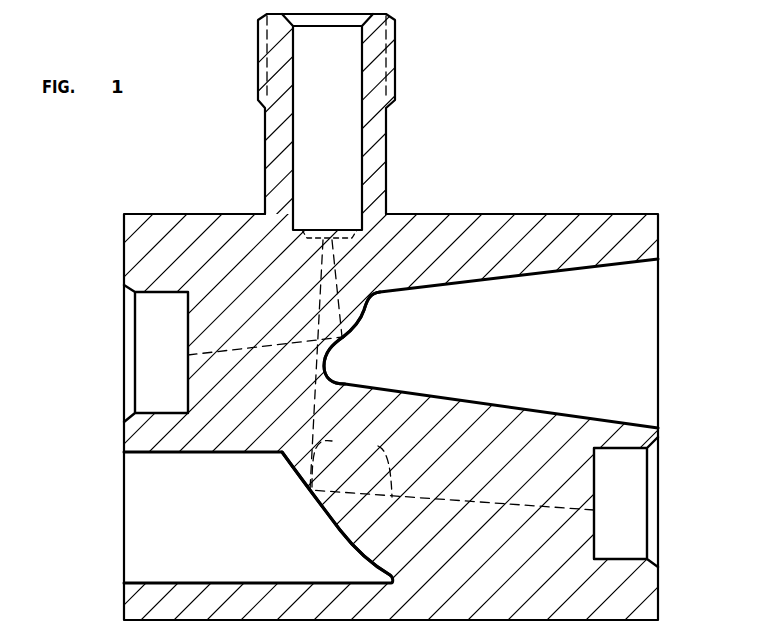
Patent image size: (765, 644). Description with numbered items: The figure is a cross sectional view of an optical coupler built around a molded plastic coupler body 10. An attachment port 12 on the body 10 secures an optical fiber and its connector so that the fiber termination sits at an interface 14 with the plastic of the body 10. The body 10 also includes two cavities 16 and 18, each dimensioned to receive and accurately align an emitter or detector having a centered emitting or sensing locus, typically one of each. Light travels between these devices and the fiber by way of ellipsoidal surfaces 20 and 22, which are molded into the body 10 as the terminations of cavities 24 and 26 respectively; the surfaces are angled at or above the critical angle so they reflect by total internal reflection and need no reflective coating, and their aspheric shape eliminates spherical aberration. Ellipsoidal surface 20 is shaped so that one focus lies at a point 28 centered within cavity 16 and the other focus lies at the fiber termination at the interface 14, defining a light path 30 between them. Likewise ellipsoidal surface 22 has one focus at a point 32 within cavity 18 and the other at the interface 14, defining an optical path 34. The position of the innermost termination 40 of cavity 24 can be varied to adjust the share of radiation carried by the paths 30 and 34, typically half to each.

The coupler body 10 is at (218, 233).
The attachment port 12 is at (398, 122).
The interface 14 is at (318, 232).
The cavity 16 is at (163, 387).
The cavity 18 is at (625, 468).
The ellipsoidal surface 20 is at (367, 313).
The ellipsoidal surface 22 is at (355, 545).
The cavity 24 is at (618, 355).
The cavity 26 is at (172, 536).
The point 28 is at (188, 355).
The light path 30 is at (252, 348).
The point 32 is at (595, 511).
The optical path 34 is at (352, 469).
The innermost termination 40 is at (325, 366).